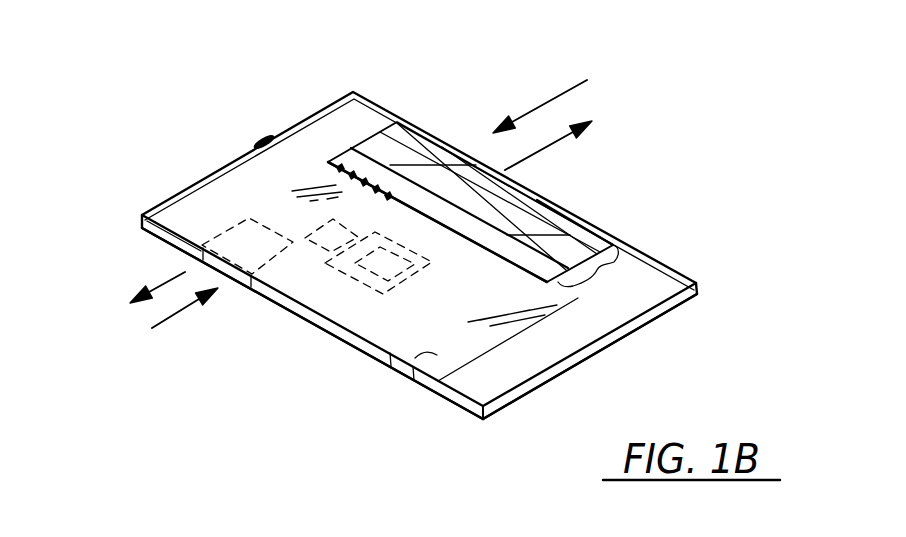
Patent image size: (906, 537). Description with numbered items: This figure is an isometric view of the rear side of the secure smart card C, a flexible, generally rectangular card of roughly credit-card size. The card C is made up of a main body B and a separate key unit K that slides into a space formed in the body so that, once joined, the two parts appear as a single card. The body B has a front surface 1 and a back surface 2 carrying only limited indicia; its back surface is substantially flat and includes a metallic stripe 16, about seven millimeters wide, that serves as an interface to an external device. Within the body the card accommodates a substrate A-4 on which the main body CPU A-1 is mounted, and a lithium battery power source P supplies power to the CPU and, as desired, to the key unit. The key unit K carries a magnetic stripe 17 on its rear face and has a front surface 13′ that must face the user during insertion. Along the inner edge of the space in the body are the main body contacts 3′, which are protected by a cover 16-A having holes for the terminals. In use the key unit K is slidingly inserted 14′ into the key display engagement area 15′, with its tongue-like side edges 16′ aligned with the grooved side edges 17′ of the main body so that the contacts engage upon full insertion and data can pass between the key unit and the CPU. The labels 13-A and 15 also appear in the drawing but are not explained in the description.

The front surface 1 is at (313, 323).
The back surface 2 is at (387, 364).
The main body B is at (230, 184).
The card C is at (371, 86).
The lithium battery power source P is at (313, 237).
The key unit K is at (448, 198).
The edge marker 13-A is at (261, 137).
The cover 16-A is at (263, 246).
The side contact 15 is at (405, 380).
The metallic stripe 16 is at (610, 314).
The key display engagement area 15′ is at (578, 298).
The main body contacts 3′ is at (327, 160).
The side edges of the main body 17′ is at (394, 122).
The side edges of the key display 16′ is at (410, 124).
The front surface of the key unit 13′ is at (476, 165).
The magnetic stripe 17 is at (570, 235).
The sliding insertion 14′ is at (379, 195).
The substrate A-4 is at (437, 275).
The main body CPU A-1 is at (386, 287).